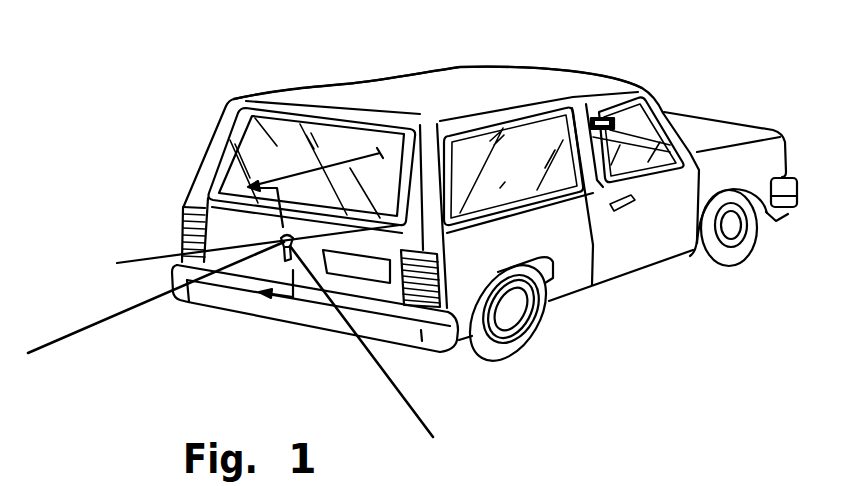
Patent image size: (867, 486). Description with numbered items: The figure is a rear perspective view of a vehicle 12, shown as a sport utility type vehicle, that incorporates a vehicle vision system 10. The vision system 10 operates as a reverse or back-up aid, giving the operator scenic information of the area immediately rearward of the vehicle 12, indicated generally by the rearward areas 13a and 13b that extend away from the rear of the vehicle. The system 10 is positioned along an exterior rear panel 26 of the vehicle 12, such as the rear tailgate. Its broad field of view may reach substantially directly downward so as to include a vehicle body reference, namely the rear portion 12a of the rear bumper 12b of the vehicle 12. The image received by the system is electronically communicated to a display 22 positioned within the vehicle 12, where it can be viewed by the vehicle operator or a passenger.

The vehicle vision system 10 is at (240, 230).
The vehicle 12 is at (453, 75).
The rear portion of rear bumper 12a is at (327, 320).
The rear bumper 12b is at (449, 335).
The area rearward of the vehicle 13a is at (87, 330).
The area rearward of the vehicle 13b is at (378, 370).
The display 22 is at (615, 125).
The exterior rear panel 26 is at (281, 241).